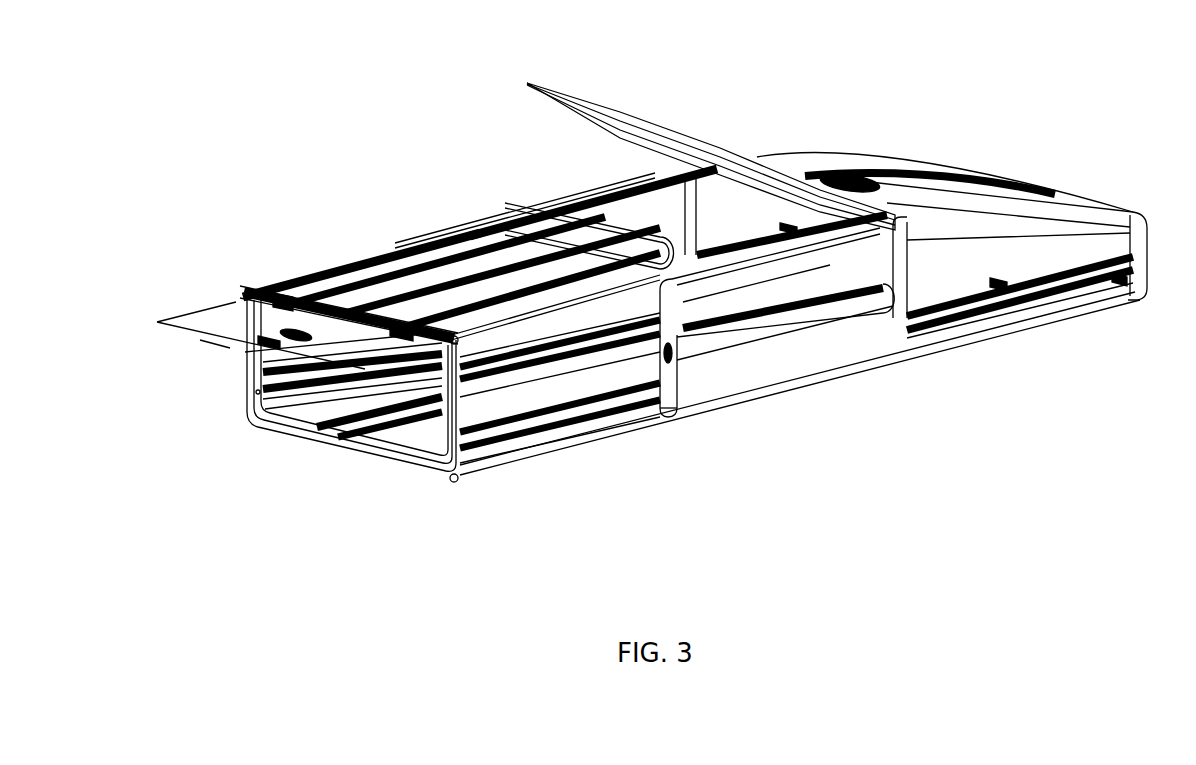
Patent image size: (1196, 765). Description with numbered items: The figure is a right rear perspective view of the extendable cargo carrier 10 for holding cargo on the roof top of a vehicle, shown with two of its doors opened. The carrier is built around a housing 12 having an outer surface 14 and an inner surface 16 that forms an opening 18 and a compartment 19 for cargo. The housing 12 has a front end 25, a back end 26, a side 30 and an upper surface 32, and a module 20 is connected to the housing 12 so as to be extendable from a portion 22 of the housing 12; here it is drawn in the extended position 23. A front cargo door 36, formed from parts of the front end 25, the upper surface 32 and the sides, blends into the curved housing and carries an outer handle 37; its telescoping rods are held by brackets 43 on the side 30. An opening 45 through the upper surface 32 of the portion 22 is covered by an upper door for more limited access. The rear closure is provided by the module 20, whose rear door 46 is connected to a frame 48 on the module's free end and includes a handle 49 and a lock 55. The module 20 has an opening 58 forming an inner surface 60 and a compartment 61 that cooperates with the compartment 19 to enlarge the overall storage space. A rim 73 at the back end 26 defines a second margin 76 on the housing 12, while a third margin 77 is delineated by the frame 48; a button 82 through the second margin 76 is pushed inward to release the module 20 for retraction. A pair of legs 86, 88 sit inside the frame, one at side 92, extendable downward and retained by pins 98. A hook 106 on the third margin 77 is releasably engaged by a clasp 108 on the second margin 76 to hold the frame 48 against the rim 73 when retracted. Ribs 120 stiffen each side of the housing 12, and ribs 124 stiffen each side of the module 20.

The cargo carrier 10 is at (785, 78).
The housing 12 is at (765, 158).
The outer surface 14 is at (860, 343).
The inner surface 16 is at (533, 214).
The opening 18 is at (655, 207).
The compartment 19 is at (750, 203).
The module 20 is at (373, 253).
The portion 22 is at (483, 222).
The extended position 23 is at (793, 462).
The front end 25 is at (1142, 220).
The back end 26 is at (658, 372).
The side 30 is at (777, 360).
The upper surface 32 is at (867, 217).
The front cargo door 36 is at (935, 162).
The outer handle 37 is at (837, 173).
The brackets 43 is at (995, 280).
The opening 45 is at (603, 215).
The rear door 46 is at (208, 320).
The frame 48 is at (247, 292).
The handle 49 is at (262, 332).
The lock 55 is at (222, 338).
The opening 58 is at (408, 423).
The inner surface 60 is at (282, 403).
The compartment 61 is at (345, 413).
The rim 73 is at (653, 290).
The second margin 76 is at (670, 400).
The third margin 77 is at (473, 347).
The button 82 is at (678, 350).
The leg 86 is at (250, 428).
The leg 88 is at (455, 483).
The side 92 is at (467, 410).
The pins 98 is at (470, 450).
The hook 106 is at (470, 377).
The clasp 108 is at (680, 318).
The ribs 120 is at (805, 317).
The ribs 124 is at (577, 417).